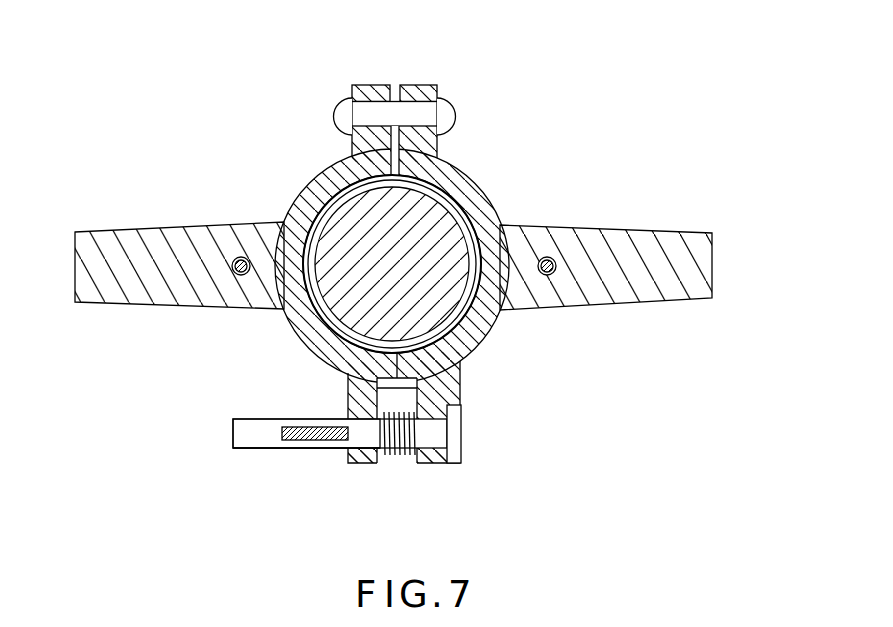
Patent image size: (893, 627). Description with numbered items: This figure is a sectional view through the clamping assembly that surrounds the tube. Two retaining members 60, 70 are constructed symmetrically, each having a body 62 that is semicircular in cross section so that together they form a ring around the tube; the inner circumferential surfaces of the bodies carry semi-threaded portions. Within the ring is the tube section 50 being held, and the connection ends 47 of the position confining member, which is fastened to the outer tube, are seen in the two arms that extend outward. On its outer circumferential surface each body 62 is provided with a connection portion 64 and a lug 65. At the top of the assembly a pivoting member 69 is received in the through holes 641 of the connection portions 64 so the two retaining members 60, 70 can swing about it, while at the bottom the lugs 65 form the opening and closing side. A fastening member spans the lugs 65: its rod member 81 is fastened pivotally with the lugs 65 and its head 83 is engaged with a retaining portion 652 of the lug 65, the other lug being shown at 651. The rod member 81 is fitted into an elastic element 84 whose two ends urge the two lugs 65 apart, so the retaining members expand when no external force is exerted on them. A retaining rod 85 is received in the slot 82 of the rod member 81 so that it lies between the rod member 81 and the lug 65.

The connection ends 47 is at (237, 256).
The shaft 50 is at (452, 234).
The retaining member 60 is at (682, 290).
The body 62 is at (312, 195).
The connection portion 64 is at (371, 88).
The through holes 641 is at (428, 82).
The lug 65 is at (366, 464).
The left clamping block 651 is at (346, 391).
The retaining portion 652 is at (463, 390).
The pivoting member 69 is at (447, 110).
The retaining member 70 is at (148, 288).
The rod member 81 is at (252, 450).
The slot 82 is at (291, 450).
The head 83 is at (461, 440).
The elastic element 84 is at (403, 455).
The retaining rod 85 is at (311, 442).